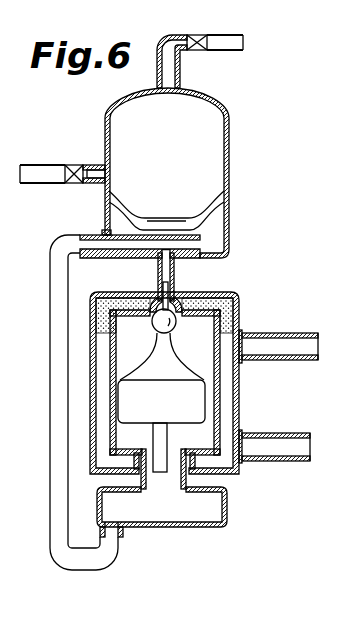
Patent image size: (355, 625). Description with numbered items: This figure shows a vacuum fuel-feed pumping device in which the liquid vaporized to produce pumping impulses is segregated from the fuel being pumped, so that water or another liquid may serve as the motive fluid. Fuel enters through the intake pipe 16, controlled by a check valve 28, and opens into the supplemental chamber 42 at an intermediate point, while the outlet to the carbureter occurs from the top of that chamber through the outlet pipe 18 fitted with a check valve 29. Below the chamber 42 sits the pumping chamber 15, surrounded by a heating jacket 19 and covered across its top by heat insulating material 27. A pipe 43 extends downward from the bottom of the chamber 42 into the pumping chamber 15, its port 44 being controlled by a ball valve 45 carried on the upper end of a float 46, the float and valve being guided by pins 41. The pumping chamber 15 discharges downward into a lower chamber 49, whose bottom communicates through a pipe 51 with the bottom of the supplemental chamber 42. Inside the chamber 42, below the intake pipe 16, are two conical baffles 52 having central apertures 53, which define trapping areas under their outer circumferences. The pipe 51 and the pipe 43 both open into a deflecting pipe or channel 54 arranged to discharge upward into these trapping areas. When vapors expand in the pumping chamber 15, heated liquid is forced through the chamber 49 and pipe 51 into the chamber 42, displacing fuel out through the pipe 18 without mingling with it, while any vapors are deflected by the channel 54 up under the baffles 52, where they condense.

The pumping chamber 15 is at (236, 308).
The intake pipe 16 is at (47, 172).
The outlet pipe 18 is at (232, 48).
The heating jacket 19 is at (224, 398).
The heat insulating material 27 is at (234, 294).
The check valve 28 is at (79, 183).
The check valve 29 is at (197, 50).
The pins 41 is at (169, 289).
The supplemental chamber 42 is at (215, 167).
The pipe 43 is at (165, 268).
The port 44 is at (158, 300).
The ball valve 45 is at (157, 327).
The float 46 is at (157, 373).
The lower chamber 49 is at (190, 508).
The pipe 51 is at (52, 402).
The conical baffles 52 is at (218, 212).
The central apertures 53 is at (163, 225).
The deflecting pipe or channel 54 is at (125, 240).